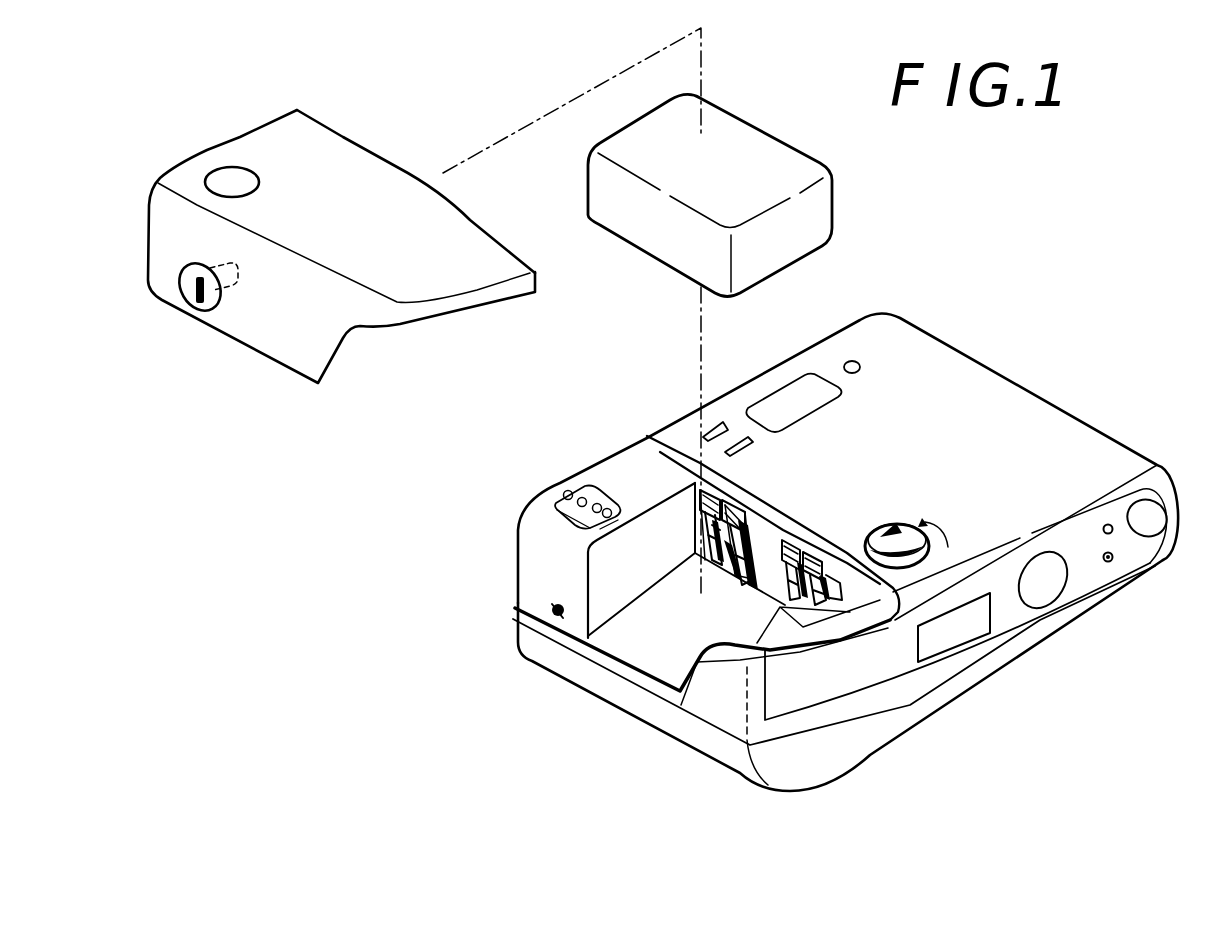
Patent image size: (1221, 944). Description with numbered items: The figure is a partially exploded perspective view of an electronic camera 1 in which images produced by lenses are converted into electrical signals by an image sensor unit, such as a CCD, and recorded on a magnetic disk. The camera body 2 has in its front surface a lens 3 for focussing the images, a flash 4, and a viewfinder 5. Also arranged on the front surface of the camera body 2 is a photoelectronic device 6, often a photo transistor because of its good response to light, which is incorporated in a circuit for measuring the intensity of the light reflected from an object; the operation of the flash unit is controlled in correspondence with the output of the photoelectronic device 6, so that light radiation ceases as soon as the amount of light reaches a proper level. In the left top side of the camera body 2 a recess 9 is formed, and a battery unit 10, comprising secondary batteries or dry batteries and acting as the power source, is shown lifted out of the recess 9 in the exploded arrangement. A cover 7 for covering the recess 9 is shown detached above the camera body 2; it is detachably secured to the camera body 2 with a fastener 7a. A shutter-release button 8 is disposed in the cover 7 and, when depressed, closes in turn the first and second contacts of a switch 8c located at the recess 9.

The electronic camera 1 is at (981, 265).
The camera body 2 is at (863, 547).
The lens 3 is at (1052, 575).
The flash 4 is at (953, 637).
The viewfinder 5 is at (1147, 517).
The photoelectronic device 6 is at (1113, 557).
The cover 7 is at (340, 158).
The fastener 7a is at (210, 303).
The shutter-release button 8 is at (233, 174).
The switch 8c is at (578, 489).
The recess 9 is at (638, 652).
The battery unit 10 is at (645, 235).